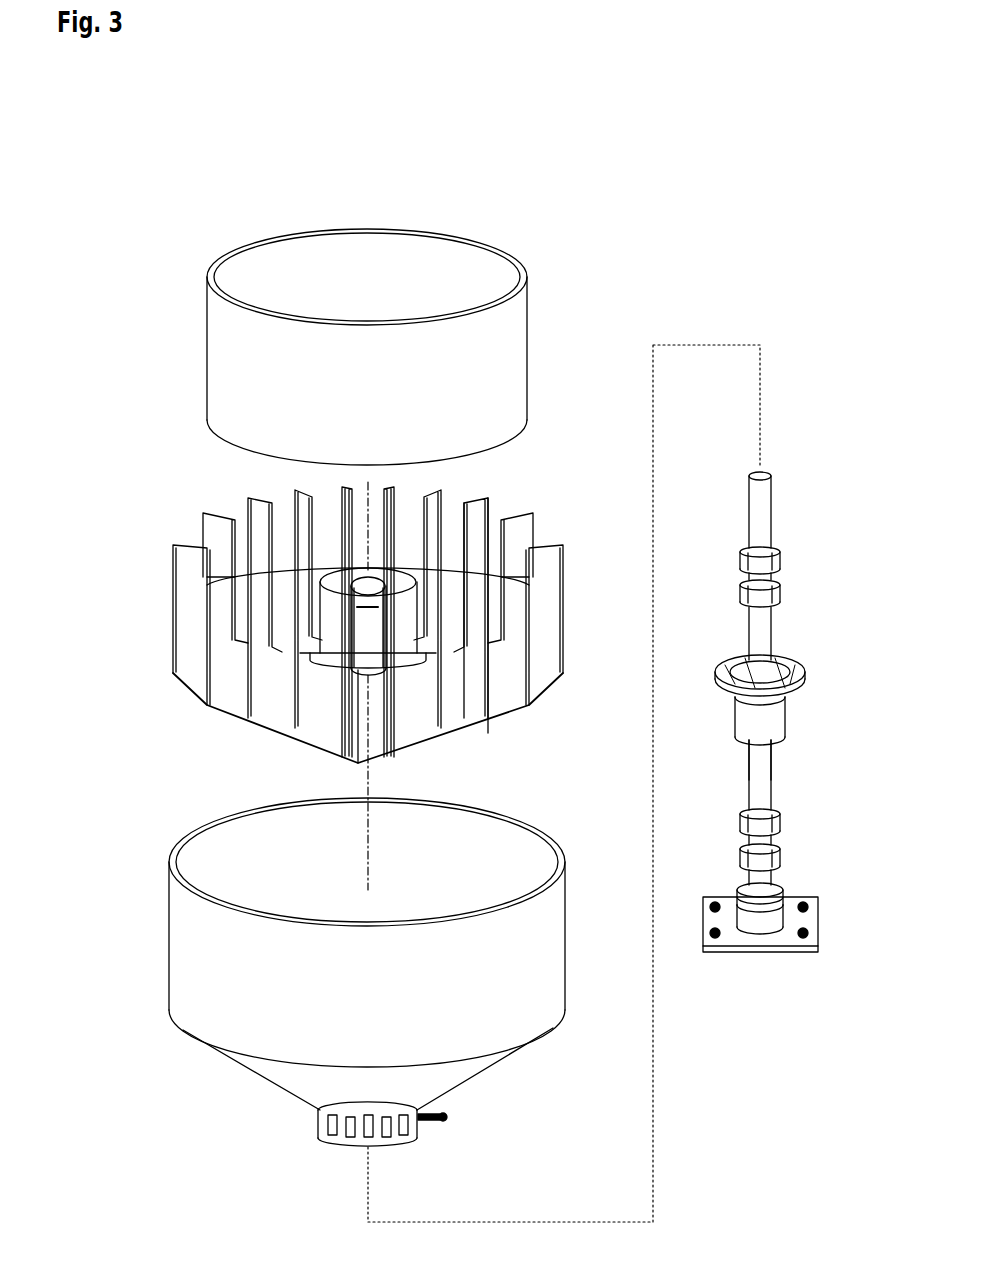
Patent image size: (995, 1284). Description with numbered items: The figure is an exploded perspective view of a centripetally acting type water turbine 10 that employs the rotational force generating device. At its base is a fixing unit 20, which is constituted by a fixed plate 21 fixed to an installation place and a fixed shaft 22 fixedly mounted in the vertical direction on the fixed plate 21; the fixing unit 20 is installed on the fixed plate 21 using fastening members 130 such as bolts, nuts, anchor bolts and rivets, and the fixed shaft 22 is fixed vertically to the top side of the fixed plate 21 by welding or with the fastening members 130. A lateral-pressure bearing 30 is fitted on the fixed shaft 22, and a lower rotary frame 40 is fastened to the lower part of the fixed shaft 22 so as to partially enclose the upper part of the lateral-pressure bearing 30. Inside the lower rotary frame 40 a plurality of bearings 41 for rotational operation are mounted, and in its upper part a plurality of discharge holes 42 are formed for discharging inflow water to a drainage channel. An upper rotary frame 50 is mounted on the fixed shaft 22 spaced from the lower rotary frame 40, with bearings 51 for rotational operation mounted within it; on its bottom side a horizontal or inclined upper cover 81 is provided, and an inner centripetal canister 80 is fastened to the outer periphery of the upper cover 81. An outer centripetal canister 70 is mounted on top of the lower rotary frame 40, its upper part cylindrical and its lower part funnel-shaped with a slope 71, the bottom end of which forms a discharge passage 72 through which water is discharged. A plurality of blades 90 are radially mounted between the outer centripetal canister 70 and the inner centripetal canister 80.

The centripetally acting type water turbine 10 is at (210, 183).
The inner centripetal canister 80 is at (513, 325).
The upper cover 81 is at (473, 557).
The upper rotary frame 50 is at (322, 566).
The blades 90 is at (173, 673).
The outer centripetal canister 70 is at (183, 1030).
The slope 71 is at (258, 1068).
The discharge passage 72 is at (318, 1123).
The fastening members 130 is at (447, 1117).
The fixing unit 20 is at (772, 783).
The fixed shaft 22 is at (772, 757).
The fixed plate 21 is at (788, 955).
The bearings 51 is at (782, 596).
The discharge holes 42 is at (808, 668).
The lower rotary frame 40 is at (790, 710).
The bearings 41 is at (782, 858).
The lateral-pressure bearing 30 is at (748, 957).